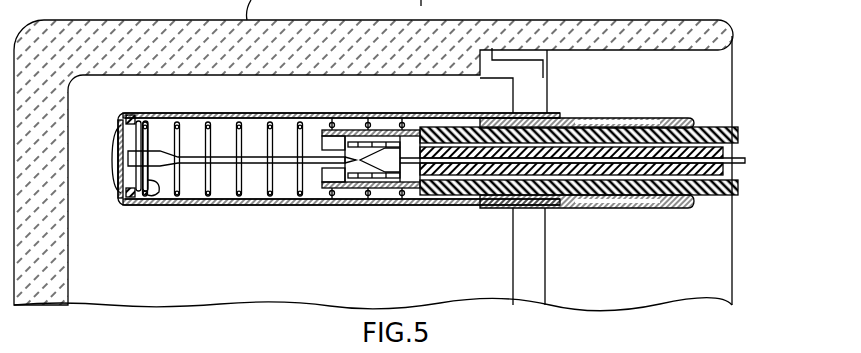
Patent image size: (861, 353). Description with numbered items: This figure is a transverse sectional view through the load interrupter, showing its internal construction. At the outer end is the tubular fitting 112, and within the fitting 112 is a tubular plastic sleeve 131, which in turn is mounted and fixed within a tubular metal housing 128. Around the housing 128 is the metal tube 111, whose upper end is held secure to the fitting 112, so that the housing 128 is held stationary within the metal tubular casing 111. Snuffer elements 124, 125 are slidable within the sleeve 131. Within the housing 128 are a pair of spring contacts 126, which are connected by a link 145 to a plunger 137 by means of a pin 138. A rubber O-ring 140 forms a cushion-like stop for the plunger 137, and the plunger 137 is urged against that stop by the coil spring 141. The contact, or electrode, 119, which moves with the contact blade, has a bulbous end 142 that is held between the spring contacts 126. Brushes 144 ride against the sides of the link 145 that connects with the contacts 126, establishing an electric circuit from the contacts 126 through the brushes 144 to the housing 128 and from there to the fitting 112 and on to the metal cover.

The metal tube 111 is at (289, 206).
The tubular fitting 112 is at (598, 118).
The contact 119 is at (745, 160).
The snuffer element 124 is at (727, 150).
The snuffer element 125 is at (727, 173).
The spring contacts 126 is at (397, 160).
The tubular metal housing 128 is at (360, 189).
The tubular plastic sleeve 131 is at (707, 125).
The plunger 137 is at (150, 197).
The pin 138 is at (135, 168).
The rubber O-ring 140 is at (134, 120).
The coil spring 141 is at (212, 128).
The bulbous end 142 is at (376, 160).
The brushes 144 is at (313, 134).
The link 145 is at (231, 168).